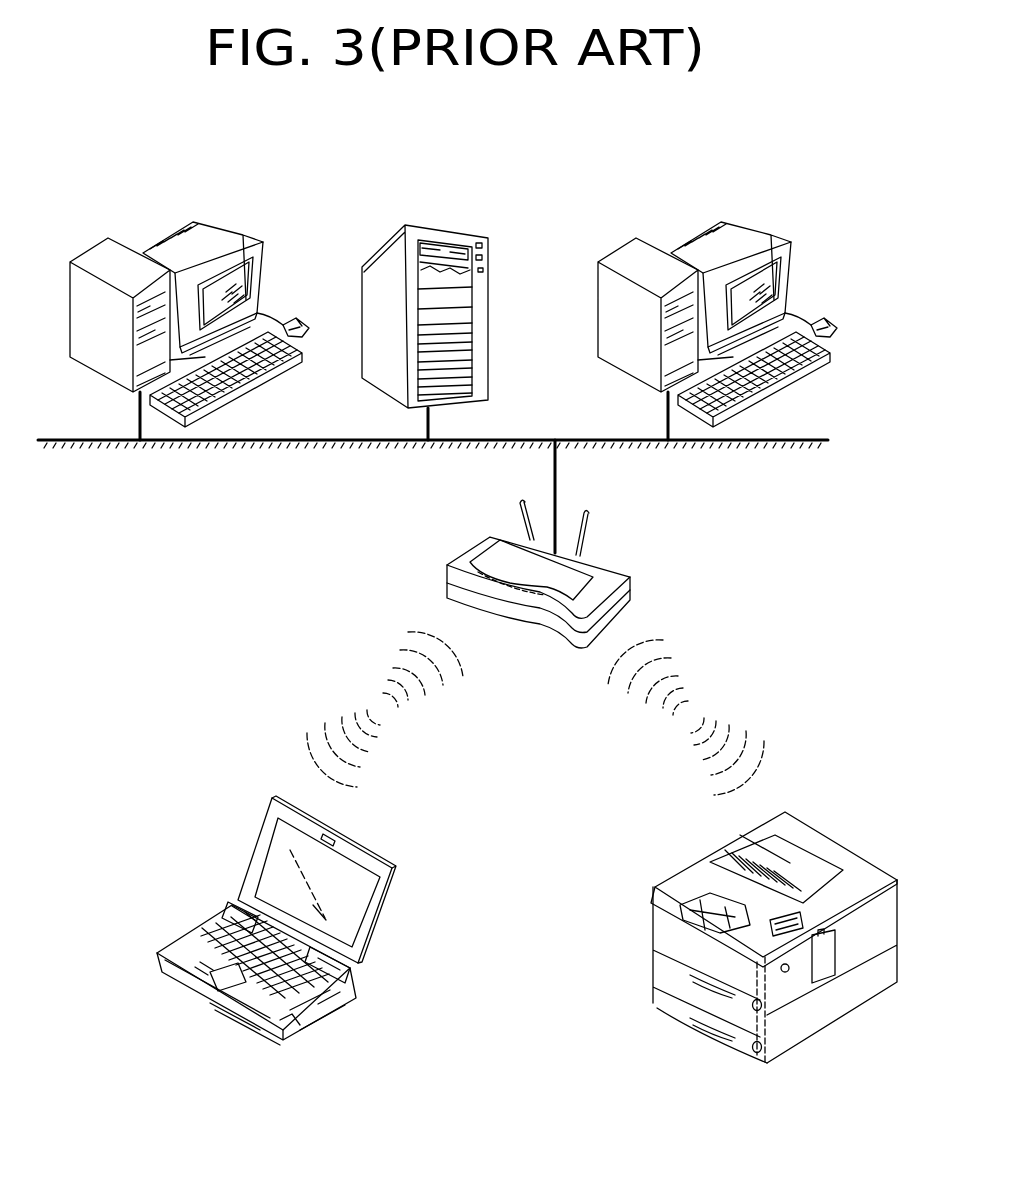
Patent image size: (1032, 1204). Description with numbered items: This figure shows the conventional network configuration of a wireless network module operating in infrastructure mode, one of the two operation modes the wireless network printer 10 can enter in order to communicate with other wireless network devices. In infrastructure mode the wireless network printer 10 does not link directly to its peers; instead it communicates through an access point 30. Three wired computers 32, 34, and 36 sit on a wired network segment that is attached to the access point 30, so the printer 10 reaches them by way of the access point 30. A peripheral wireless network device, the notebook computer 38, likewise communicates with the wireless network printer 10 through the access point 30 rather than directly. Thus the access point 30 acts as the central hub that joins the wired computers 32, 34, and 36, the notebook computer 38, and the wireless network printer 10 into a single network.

The wireless network printer 10 is at (843, 835).
The access point 30 is at (492, 557).
The wired computer 32 is at (127, 247).
The wired computer 34 is at (462, 228).
The wired computer 36 is at (663, 243).
The notebook computer 38 is at (258, 862).